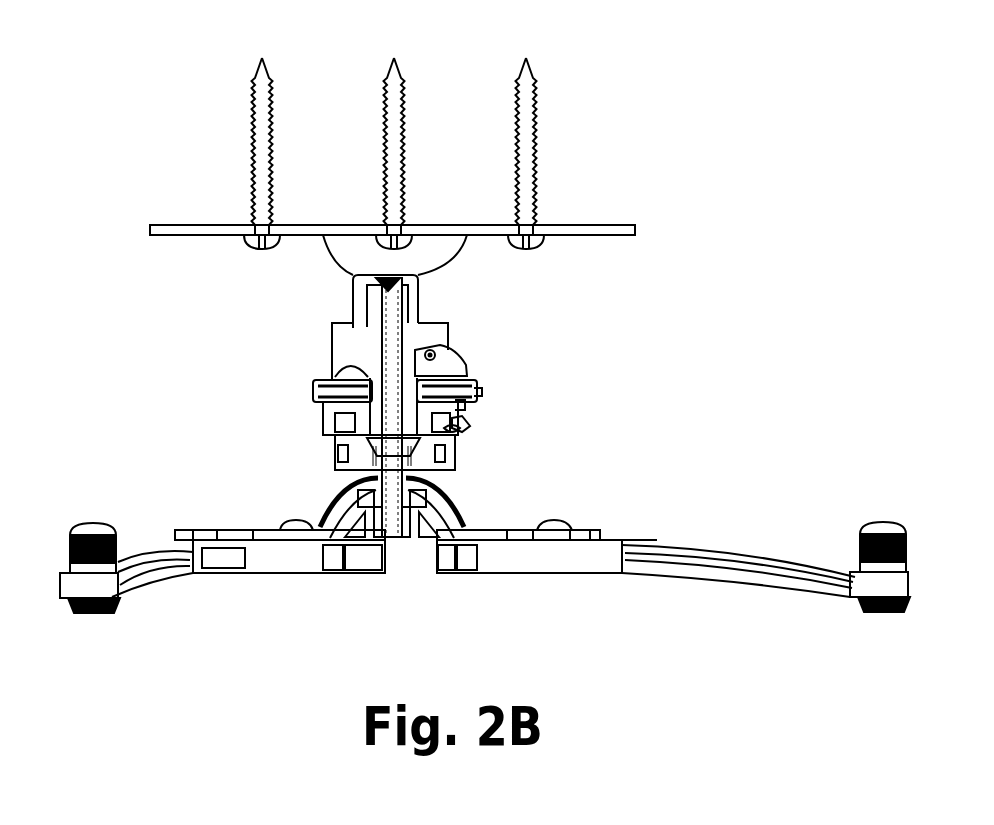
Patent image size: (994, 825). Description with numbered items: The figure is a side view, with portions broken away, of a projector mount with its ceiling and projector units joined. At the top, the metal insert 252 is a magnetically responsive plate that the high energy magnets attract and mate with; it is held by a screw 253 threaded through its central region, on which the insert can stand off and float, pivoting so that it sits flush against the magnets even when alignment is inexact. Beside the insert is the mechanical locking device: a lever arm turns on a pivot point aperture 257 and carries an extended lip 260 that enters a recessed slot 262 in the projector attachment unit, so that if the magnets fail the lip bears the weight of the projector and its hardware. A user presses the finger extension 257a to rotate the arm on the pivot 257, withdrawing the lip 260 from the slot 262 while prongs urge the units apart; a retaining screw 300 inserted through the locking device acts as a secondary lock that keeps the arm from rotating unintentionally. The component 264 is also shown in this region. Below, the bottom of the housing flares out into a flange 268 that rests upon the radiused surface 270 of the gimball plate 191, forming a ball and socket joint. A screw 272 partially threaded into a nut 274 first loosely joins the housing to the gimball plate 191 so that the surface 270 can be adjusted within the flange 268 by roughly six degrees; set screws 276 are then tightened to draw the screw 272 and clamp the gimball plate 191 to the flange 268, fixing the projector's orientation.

The gimball plate 191 is at (263, 533).
The metal insert 252 is at (335, 378).
The screw 253 is at (410, 316).
The pivot point aperture 257 is at (440, 356).
The finger extension 257a is at (452, 424).
The extended lip 260 is at (455, 428).
The recessed slot 262 is at (465, 403).
The left body 264 is at (367, 357).
The flange 268 is at (428, 492).
The surface 270 is at (470, 522).
The screw 272 is at (352, 494).
The nut 274 is at (410, 538).
The set screws 276 is at (360, 458).
The retaining screw 300 is at (468, 378).